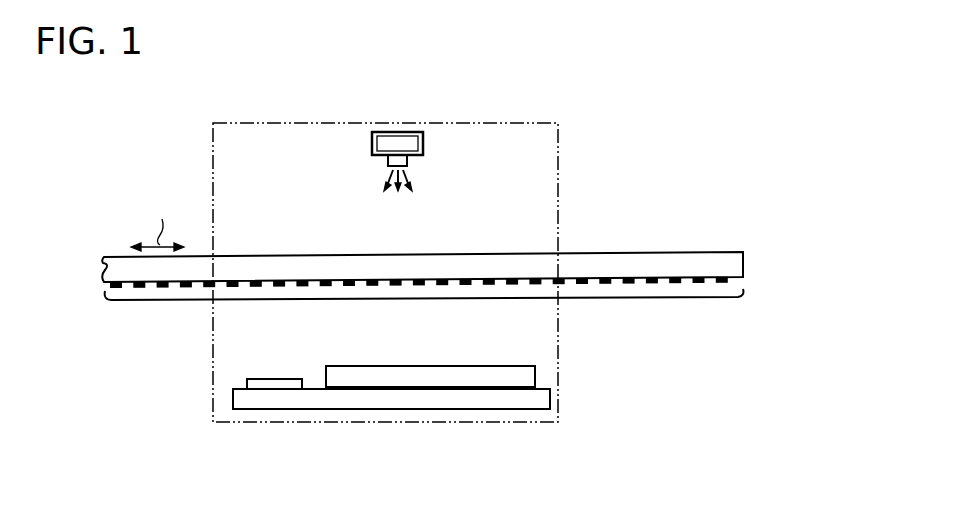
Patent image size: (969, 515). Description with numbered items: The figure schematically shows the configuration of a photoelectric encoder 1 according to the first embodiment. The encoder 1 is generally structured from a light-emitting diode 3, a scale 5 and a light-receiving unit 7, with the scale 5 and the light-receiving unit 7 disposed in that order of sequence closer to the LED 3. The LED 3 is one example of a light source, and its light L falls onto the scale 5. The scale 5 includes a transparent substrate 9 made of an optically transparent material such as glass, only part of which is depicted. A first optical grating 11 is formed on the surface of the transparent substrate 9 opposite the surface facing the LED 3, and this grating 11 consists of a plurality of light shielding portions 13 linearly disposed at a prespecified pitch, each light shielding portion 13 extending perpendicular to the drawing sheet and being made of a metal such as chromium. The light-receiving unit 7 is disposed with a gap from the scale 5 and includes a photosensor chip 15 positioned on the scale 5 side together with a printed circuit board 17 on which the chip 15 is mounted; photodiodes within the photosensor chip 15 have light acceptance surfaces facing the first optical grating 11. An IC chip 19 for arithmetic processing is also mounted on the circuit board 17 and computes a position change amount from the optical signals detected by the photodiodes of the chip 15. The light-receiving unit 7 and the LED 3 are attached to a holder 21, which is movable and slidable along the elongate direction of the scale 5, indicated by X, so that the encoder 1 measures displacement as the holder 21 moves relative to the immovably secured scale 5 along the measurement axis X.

The photoelectric encoder 1 is at (671, 153).
The light-emitting diode 3 is at (423, 142).
The scale 5 is at (764, 246).
The light-receiving unit 7 is at (547, 366).
The transparent substrate 9 is at (743, 265).
The first optical grating 11 is at (407, 297).
The light shielding portion 13 is at (738, 284).
The photosensor chip 15 is at (535, 378).
The printed circuit board 17 is at (550, 398).
The IC chip 19 is at (247, 384).
The holder 21 is at (213, 150).